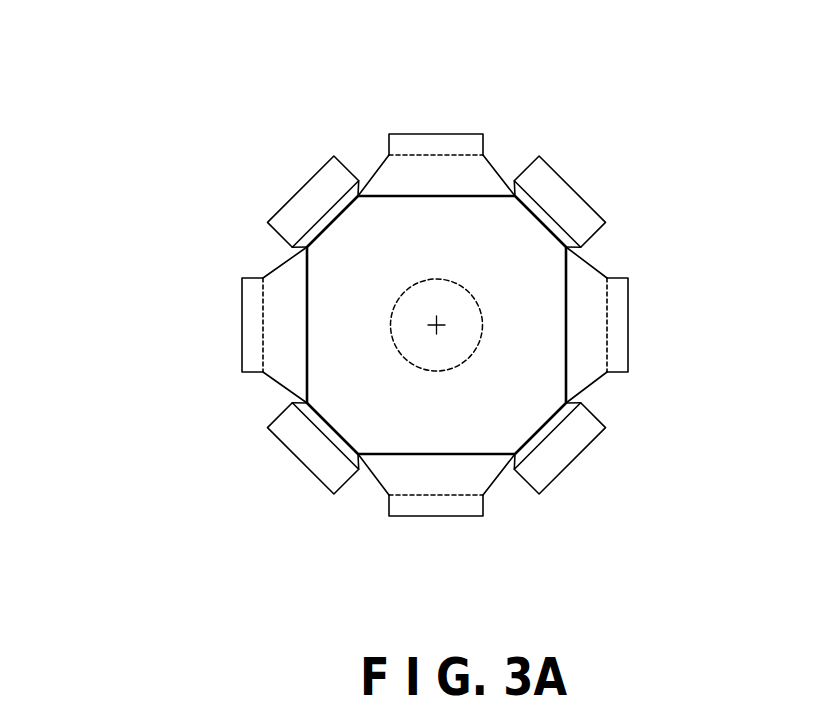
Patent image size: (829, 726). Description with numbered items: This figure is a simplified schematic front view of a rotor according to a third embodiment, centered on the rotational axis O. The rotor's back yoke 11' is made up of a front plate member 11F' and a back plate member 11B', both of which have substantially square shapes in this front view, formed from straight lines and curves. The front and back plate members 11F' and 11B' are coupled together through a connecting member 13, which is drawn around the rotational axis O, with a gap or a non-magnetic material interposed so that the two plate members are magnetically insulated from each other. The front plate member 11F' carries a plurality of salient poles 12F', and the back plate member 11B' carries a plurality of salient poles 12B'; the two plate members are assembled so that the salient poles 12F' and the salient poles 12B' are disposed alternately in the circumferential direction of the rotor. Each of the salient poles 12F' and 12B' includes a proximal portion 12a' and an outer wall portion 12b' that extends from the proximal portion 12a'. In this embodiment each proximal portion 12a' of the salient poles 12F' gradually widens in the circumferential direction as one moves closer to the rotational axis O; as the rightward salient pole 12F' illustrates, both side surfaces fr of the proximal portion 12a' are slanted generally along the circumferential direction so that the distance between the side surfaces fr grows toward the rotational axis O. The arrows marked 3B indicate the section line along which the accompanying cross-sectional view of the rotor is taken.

The back yoke 11' is at (334, 325).
The back plate member 11B' is at (239, 224).
The front plate member 11F' is at (222, 241).
The salient poles 12F' is at (437, 330).
The salient poles 12B' is at (392, 317).
The proximal portion 12a' is at (436, 329).
The outer wall portion 12b' is at (437, 329).
The connecting member 13 is at (420, 290).
The rotational axis O is at (440, 330).
The side surfaces fr is at (596, 267).
The section line 3B is at (578, 185).